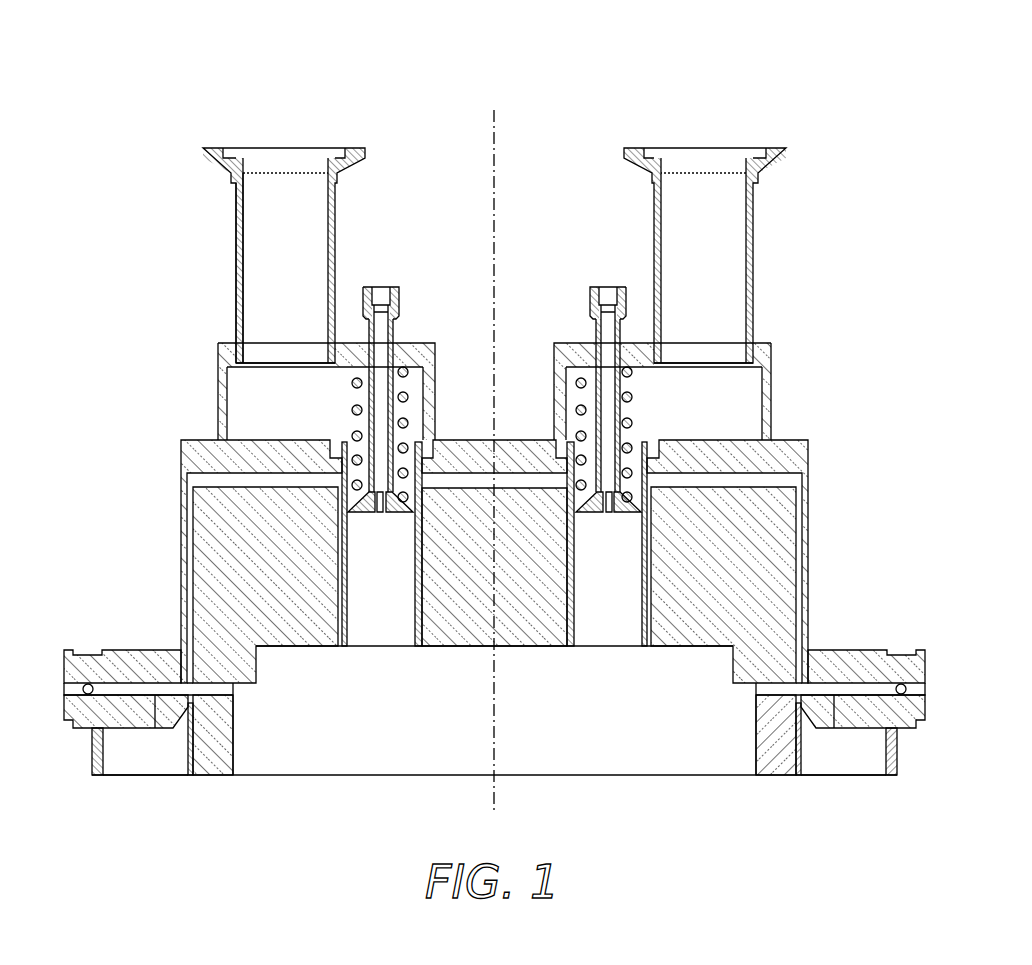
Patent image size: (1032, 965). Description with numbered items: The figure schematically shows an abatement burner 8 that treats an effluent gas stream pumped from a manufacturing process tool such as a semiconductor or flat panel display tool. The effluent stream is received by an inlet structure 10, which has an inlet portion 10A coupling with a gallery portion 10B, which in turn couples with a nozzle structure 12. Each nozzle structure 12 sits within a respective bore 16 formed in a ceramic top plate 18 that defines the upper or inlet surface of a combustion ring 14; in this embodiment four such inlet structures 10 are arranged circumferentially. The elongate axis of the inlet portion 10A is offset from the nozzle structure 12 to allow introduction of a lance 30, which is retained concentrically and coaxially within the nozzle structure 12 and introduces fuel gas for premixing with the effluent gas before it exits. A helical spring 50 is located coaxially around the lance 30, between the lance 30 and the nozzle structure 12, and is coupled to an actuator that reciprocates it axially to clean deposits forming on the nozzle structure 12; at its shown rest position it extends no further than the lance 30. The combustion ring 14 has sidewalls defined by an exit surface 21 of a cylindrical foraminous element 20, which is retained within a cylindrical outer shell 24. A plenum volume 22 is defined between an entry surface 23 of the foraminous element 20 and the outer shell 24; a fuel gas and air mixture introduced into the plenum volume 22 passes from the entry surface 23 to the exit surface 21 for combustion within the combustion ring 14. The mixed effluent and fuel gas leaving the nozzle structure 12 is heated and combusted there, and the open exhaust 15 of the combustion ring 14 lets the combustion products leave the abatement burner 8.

The abatement burner 8 is at (238, 77).
The inlet structure 10 is at (236, 219).
The inlet portion 10A is at (236, 294).
The gallery portion 10B is at (218, 388).
The nozzle structure 12 is at (382, 648).
The combustion ring 14 is at (436, 749).
The exhaust 15 is at (583, 821).
The bore 16 is at (341, 503).
The ceramic top plate 18 is at (194, 569).
The foraminous element 20 is at (218, 777).
The exit surface 21 is at (233, 734).
The plenum volume 22 is at (127, 767).
The entry surface 23 is at (188, 743).
The outer shell 24 is at (91, 757).
The lance 30 is at (400, 299).
The helical spring 50 is at (408, 397).